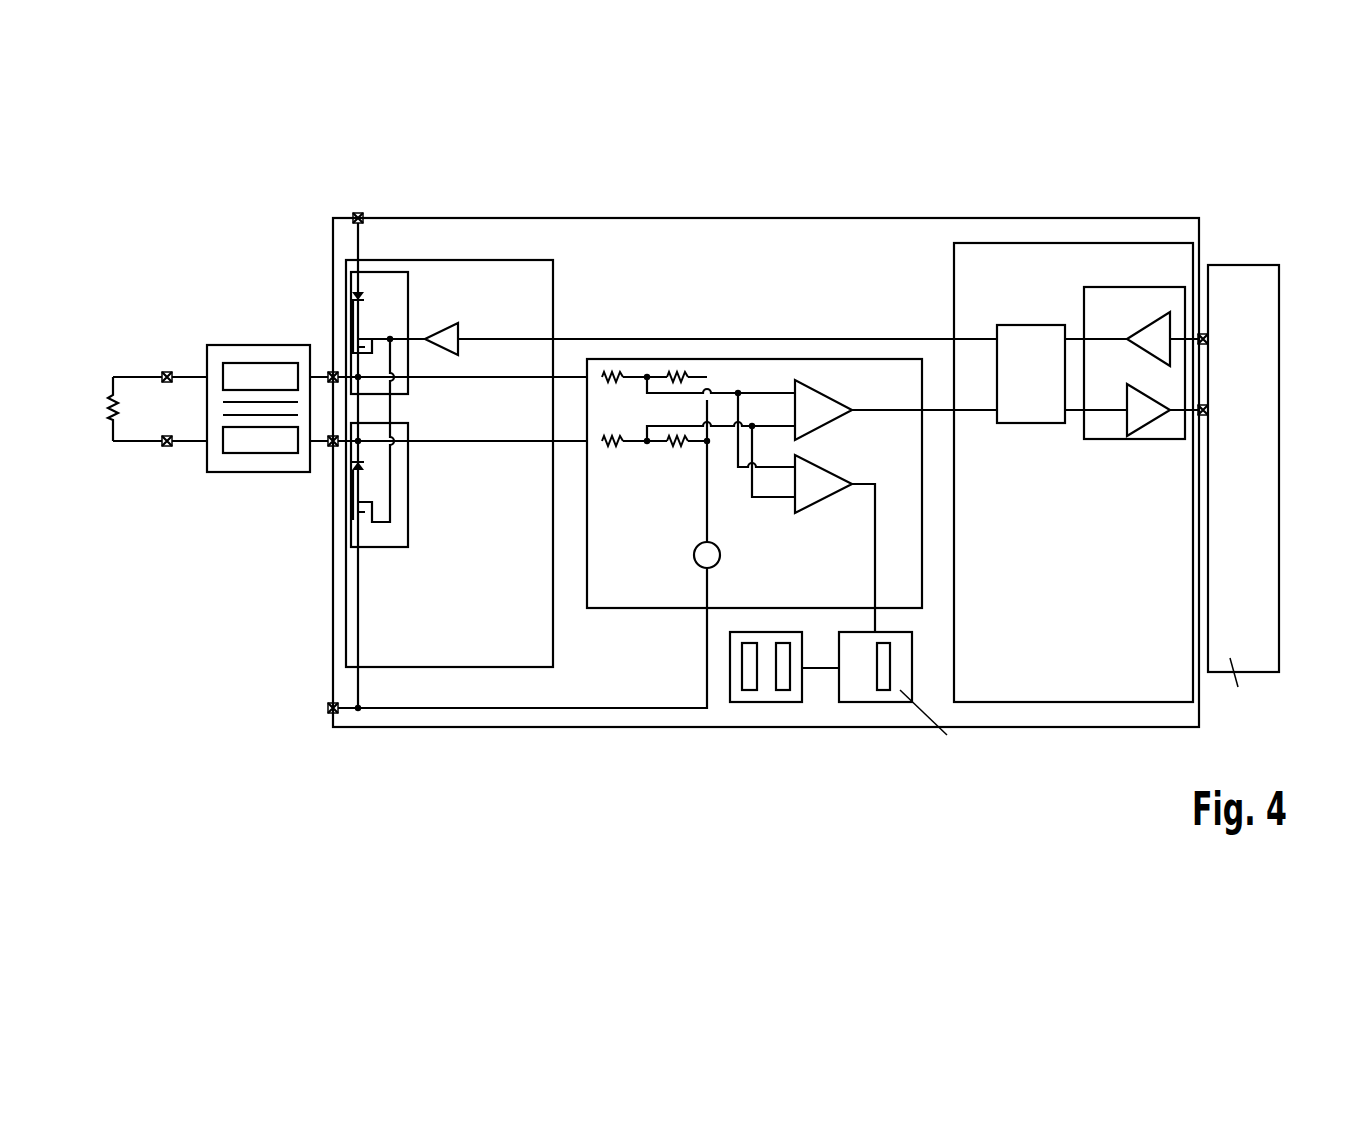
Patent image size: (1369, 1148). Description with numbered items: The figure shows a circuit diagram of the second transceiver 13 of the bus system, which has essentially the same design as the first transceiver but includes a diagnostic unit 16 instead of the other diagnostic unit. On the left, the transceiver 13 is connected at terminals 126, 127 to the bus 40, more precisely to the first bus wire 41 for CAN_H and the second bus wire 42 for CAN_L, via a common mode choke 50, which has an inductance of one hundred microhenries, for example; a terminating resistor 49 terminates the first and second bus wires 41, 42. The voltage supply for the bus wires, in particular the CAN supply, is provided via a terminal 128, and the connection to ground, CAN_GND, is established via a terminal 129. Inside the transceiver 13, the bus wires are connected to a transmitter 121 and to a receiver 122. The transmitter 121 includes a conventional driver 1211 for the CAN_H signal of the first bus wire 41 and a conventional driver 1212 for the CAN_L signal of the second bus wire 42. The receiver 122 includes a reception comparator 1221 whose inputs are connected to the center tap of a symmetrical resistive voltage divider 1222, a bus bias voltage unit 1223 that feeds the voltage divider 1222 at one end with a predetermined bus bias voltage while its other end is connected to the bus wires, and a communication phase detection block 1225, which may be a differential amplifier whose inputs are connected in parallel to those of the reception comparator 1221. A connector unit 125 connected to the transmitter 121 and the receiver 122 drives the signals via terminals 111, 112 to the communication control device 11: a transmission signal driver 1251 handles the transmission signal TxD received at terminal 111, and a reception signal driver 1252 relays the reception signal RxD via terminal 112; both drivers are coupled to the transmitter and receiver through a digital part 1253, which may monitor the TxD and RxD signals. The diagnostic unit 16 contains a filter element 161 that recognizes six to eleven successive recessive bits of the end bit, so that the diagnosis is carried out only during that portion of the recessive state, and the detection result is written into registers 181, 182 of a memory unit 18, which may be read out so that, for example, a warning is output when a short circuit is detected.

The communication control device 11 is at (1243, 264).
The terminal 111 is at (1209, 339).
The terminal 112 is at (1209, 411).
The transceiver 13 is at (799, 217).
The transmitter 121 is at (554, 276).
The driver 1211 is at (409, 303).
The driver 1212 is at (409, 498).
The receiver 122 is at (631, 609).
The reception comparator 1221 is at (840, 401).
The resistive voltage divider 1222 is at (723, 460).
The bus bias voltage unit 1223 is at (697, 546).
The communication phase detection block 1225 is at (840, 476).
The connector unit 125 is at (1090, 242).
The transmission signal driver 1251 is at (1146, 318).
The reception signal driver 1252 is at (1149, 433).
The digital part 1253 is at (1031, 324).
The terminal 126 is at (331, 372).
The terminal 127 is at (331, 446).
The terminal 128 is at (358, 212).
The terminal 129 is at (331, 713).
The diagnostic unit 16 is at (900, 703).
The filter element 161 is at (883, 691).
The memory unit 18 is at (797, 703).
The register 181 is at (750, 691).
The register 182 is at (782, 691).
The bus 40 is at (177, 343).
The first bus wire 41 is at (164, 371).
The second bus wire 42 is at (165, 447).
The terminating resistor 49 is at (112, 380).
The common mode choke 50 is at (250, 473).